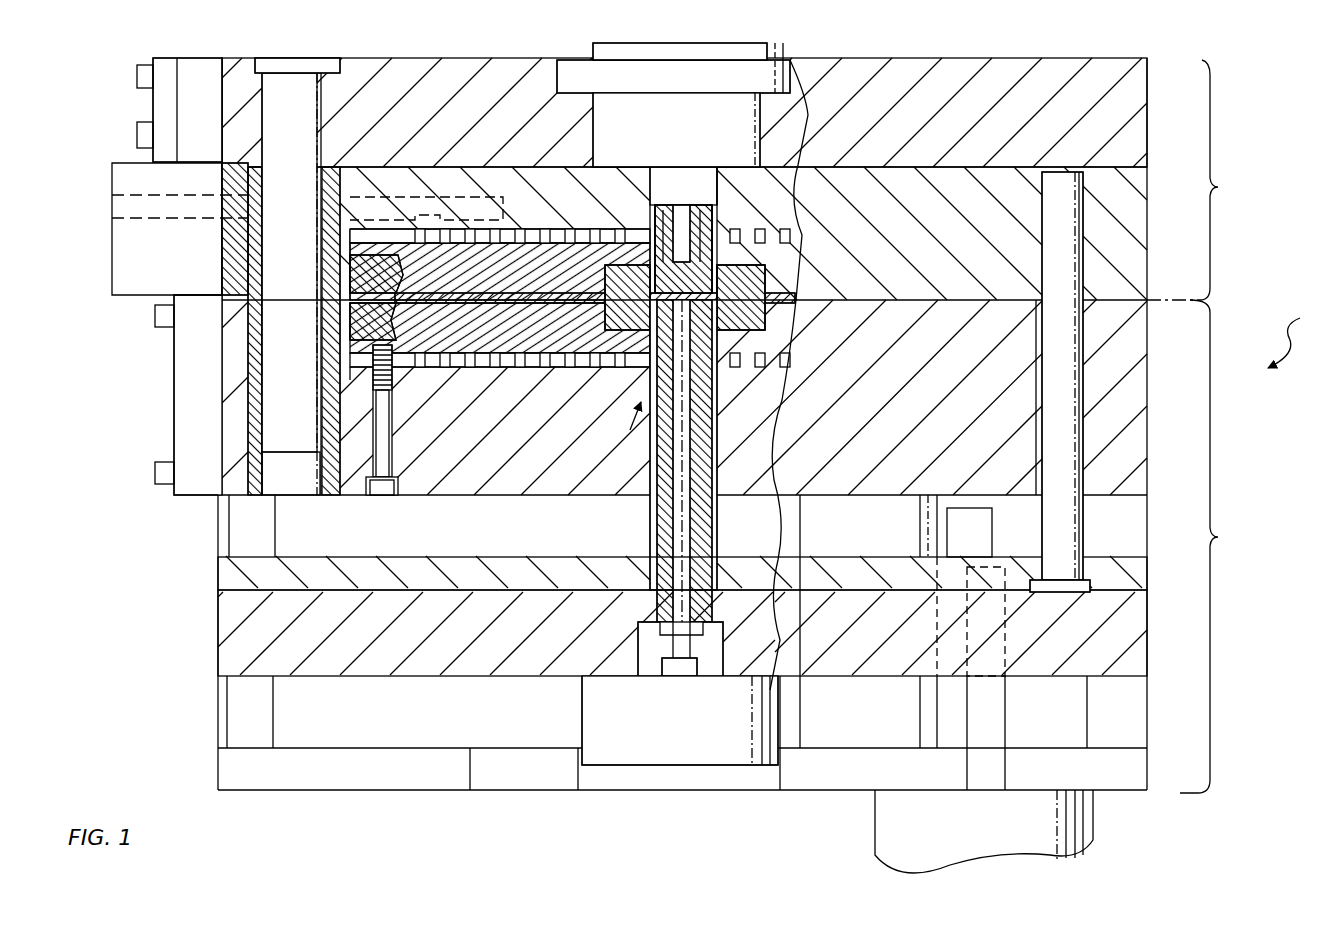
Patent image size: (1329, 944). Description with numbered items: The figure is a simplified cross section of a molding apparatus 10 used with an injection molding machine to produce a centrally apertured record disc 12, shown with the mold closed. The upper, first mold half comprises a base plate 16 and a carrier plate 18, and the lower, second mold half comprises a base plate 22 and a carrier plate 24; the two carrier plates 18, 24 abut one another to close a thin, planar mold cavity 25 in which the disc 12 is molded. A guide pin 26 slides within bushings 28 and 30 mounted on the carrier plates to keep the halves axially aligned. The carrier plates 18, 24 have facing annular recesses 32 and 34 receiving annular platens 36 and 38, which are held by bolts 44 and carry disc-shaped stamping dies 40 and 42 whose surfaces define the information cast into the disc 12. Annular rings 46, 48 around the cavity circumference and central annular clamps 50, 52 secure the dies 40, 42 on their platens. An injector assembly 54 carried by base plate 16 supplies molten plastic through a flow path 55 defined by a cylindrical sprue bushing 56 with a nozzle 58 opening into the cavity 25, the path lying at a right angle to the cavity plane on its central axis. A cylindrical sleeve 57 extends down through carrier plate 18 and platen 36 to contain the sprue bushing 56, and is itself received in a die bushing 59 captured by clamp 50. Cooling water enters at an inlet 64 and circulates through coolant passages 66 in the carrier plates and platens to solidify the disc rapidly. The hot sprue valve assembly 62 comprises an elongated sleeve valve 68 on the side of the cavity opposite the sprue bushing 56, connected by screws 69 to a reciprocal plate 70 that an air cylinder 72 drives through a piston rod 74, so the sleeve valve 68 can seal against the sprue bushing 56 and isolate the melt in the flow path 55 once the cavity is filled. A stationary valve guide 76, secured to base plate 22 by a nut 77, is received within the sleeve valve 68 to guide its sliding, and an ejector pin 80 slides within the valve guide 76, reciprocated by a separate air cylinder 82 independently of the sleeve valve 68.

The molding apparatus 10 is at (1293, 328).
The record disc 12 is at (480, 305).
The base plate 16 is at (1058, 72).
The carrier plate 18 is at (945, 190).
The base plate 22 is at (1140, 640).
The carrier plate 24 is at (1140, 403).
The mold cavity 25 is at (788, 298).
The guide pins 26 is at (272, 322).
The bushing 28 is at (252, 258).
The bushing 30 is at (242, 380).
The annular plate-shaped recess 32 is at (772, 232).
The annular plate-shaped recess 34 is at (428, 372).
The annular platen 36 is at (500, 242).
The annular platen 38 is at (522, 372).
The stamping die 40 is at (418, 292).
The stamping die 42 is at (402, 312).
The bolts 44 is at (393, 462).
The annular ring 46 is at (326, 276).
The annular ring 48 is at (336, 312).
The annular clamp 50 is at (500, 264).
The annular clamp 52 is at (500, 335).
The injector assembly 54 is at (795, 76).
The flow path 55 is at (683, 233).
The sprue bushing 56 is at (720, 218).
The cylindrical sleeve 57 is at (655, 212).
The nozzle 58 is at (735, 274).
The die bushing 59 is at (632, 266).
The hot sprue valve assembly 62 is at (623, 432).
The inlet 64 is at (147, 222).
The coolant fluid flow passages 66 is at (565, 232).
The sleeve valve 68 is at (716, 472).
The screws 69 is at (728, 590).
The reciprocal plate 70 is at (496, 572).
The air cylinder 72 is at (880, 826).
The piston rod 74 is at (1010, 590).
The valve guide 76 is at (698, 424).
The nut 77 is at (724, 636).
The ejector pin 80 is at (673, 506).
The air cylinder 82 is at (580, 711).